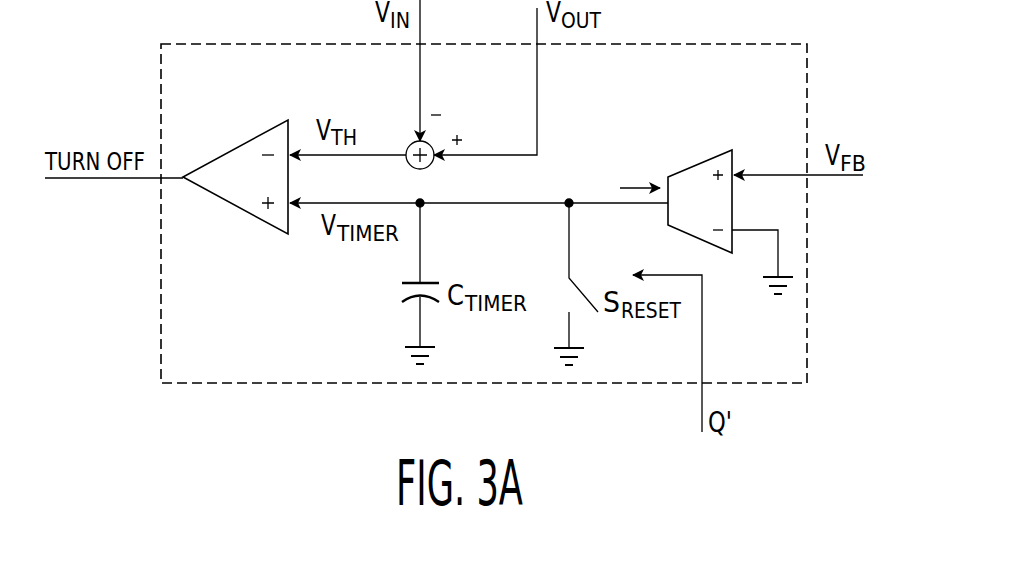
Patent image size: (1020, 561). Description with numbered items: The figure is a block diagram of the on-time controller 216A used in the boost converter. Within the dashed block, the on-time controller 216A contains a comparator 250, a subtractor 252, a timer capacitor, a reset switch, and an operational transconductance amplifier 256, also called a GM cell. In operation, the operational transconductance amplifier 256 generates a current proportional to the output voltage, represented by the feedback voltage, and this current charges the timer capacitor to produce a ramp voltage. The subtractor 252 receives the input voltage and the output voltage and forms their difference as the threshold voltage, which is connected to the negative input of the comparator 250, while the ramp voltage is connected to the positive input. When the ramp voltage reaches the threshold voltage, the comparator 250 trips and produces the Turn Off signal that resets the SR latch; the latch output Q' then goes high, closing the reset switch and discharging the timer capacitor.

The on-time controller 216A is at (160, 284).
The comparator 250 is at (255, 128).
The subtractor 252 is at (409, 148).
The operational transconductance amplifier 256 is at (690, 164).